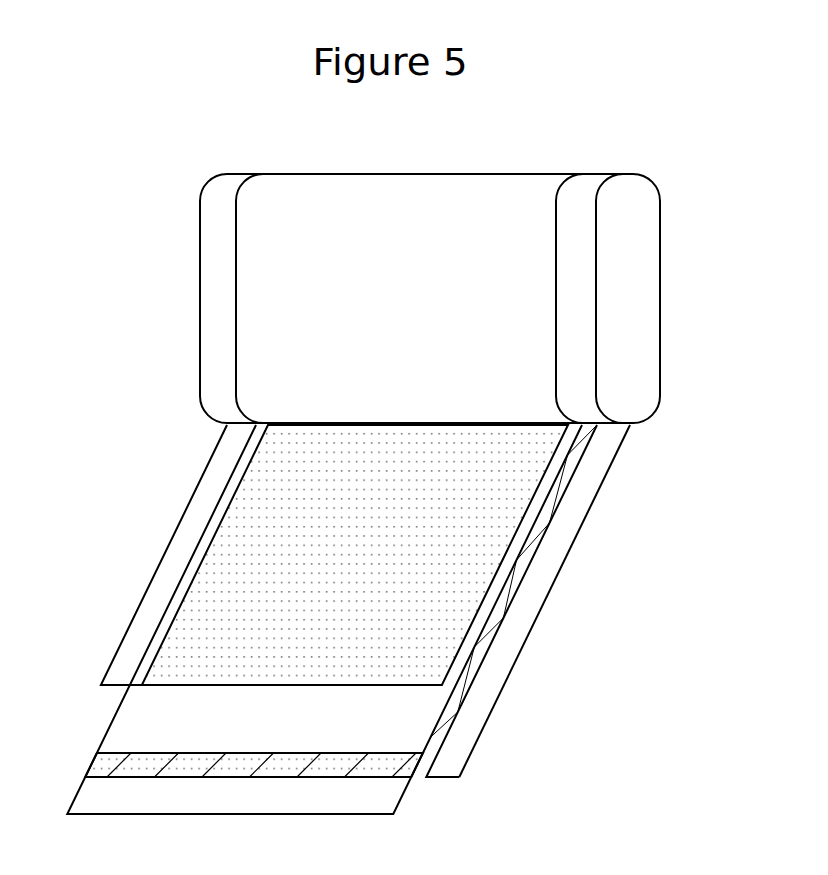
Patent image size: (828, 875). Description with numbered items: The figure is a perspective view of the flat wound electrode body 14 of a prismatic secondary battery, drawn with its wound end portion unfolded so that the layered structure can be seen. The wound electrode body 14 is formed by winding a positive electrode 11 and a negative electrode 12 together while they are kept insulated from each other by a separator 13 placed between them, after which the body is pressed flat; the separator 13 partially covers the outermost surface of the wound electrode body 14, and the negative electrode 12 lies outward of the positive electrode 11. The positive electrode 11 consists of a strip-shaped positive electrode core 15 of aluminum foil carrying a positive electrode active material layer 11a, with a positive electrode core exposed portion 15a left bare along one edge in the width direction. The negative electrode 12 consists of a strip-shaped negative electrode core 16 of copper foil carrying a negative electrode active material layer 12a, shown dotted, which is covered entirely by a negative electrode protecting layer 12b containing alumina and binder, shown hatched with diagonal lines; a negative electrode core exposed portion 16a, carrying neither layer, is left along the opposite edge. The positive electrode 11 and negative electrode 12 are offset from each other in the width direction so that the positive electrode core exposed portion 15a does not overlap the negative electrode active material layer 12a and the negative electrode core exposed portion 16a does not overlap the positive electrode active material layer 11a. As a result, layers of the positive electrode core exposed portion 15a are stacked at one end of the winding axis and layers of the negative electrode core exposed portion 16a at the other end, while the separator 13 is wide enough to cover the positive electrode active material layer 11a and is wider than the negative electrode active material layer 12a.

The positive electrode 11 is at (341, 555).
The positive electrode active material layer 11a is at (265, 518).
The negative electrode 12 is at (402, 645).
The negative electrode active material layer 12a is at (243, 767).
The negative electrode protecting layer 12b is at (515, 580).
The separator 13 is at (497, 258).
The wound electrode body 14 is at (196, 271).
The positive electrode core 15 is at (141, 429).
The positive electrode core exposed portion 15a is at (135, 657).
The negative electrode core 16 is at (569, 475).
The negative electrode core exposed portion 16a is at (510, 628).